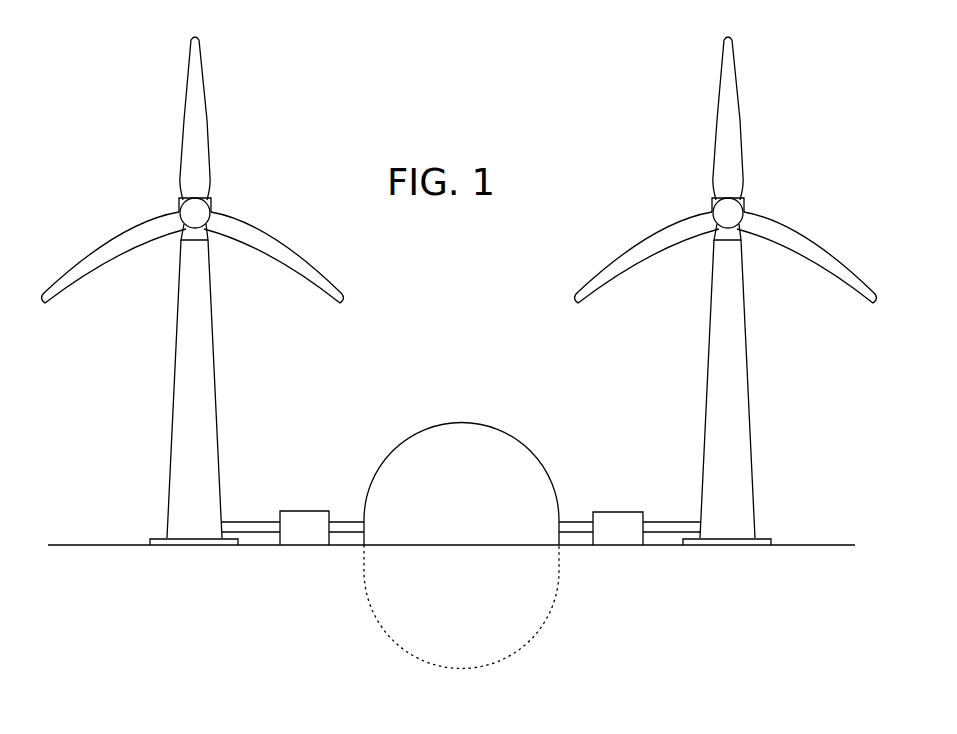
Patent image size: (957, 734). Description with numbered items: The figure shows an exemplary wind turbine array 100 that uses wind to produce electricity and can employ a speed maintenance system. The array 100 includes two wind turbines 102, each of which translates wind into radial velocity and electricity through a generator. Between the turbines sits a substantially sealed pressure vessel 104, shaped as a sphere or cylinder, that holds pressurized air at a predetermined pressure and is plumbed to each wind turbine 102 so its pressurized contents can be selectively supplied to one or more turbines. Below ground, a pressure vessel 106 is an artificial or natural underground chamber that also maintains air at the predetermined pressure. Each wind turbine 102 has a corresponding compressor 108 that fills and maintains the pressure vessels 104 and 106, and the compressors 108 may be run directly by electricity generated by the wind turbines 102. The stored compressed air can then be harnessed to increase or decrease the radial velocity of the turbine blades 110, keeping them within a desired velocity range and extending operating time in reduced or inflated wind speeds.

The wind turbine array 100 is at (122, 68).
The wind turbine 102 is at (155, 346).
The pressure vessel 104 is at (412, 437).
The underground pressure vessel 106 is at (525, 645).
The compressor 108 is at (300, 511).
The turbine blade 110 is at (328, 283).